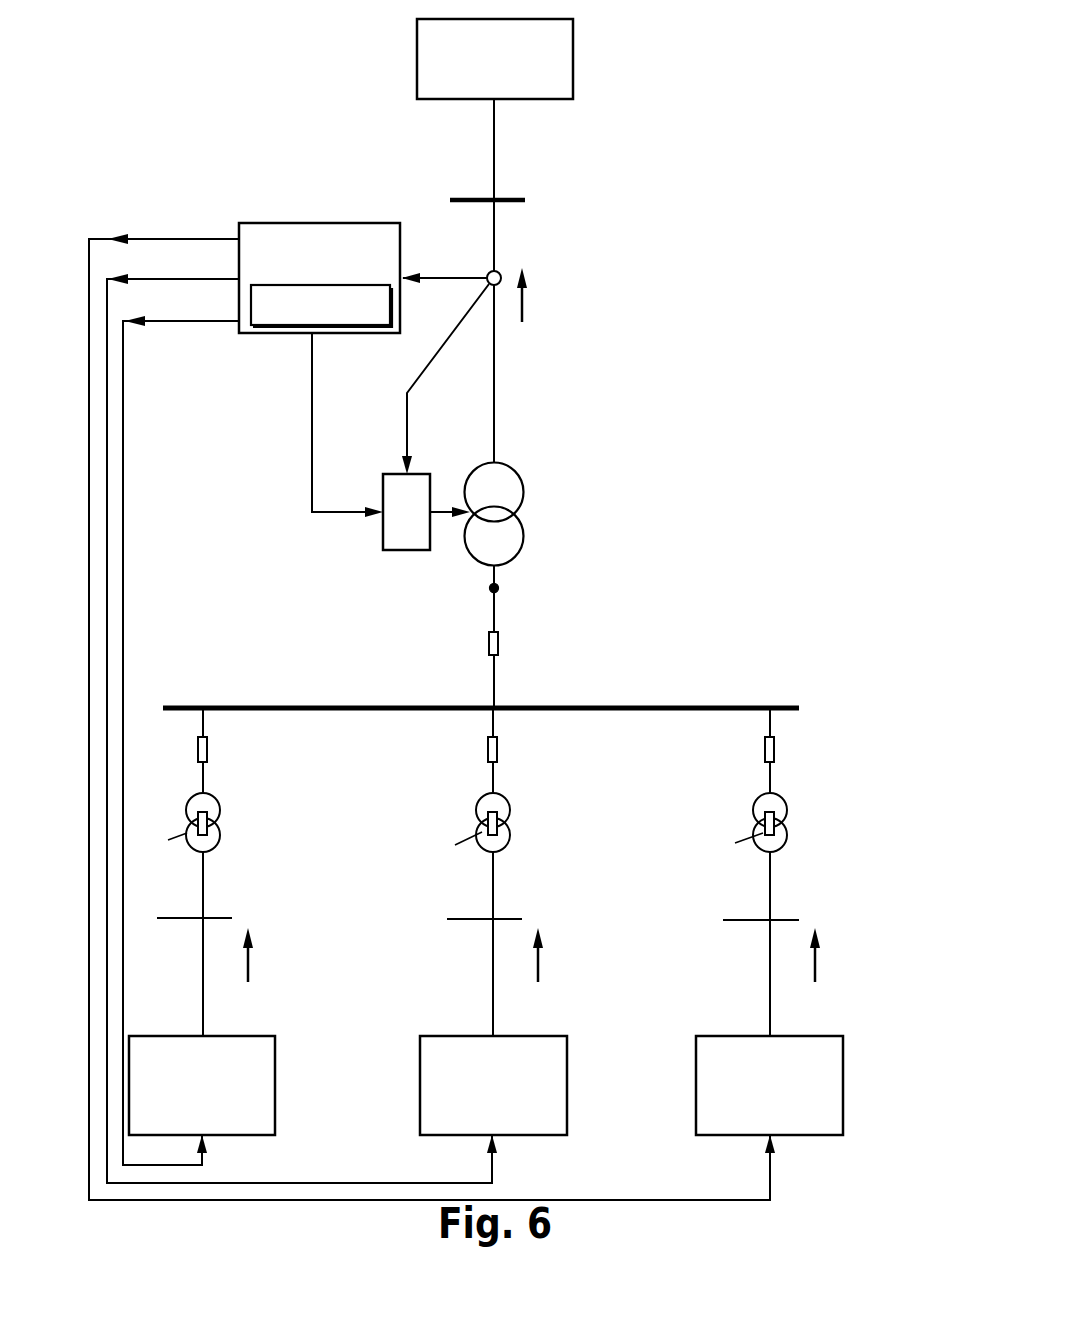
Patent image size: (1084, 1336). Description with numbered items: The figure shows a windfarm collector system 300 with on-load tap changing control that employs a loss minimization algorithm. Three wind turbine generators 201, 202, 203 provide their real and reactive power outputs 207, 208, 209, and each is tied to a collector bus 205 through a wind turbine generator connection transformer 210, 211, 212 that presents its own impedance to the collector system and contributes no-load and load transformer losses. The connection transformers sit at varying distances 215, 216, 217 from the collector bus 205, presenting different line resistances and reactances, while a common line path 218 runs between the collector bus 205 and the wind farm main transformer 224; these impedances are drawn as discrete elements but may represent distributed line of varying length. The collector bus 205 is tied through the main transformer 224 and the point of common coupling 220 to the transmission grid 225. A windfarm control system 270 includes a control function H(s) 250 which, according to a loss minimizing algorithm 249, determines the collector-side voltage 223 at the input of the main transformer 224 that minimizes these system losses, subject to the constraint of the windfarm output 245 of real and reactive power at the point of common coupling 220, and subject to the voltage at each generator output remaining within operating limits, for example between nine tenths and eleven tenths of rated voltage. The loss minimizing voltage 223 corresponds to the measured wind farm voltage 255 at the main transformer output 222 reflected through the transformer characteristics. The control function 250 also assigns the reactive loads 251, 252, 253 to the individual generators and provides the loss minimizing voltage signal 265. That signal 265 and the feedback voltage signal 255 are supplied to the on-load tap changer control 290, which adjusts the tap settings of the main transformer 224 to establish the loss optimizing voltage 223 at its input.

The wind turbine generator 201 is at (275, 1058).
The wind turbine generator 202 is at (567, 1058).
The wind turbine generator 203 is at (843, 1058).
The collector bus 205 is at (670, 711).
The output P1+jQ1 207 is at (247, 983).
The output P2+jQ2 208 is at (537, 983).
The output P3+jQ3 209 is at (814, 983).
The wind turbine generator connection transformer 210 is at (172, 808).
The wind turbine generator connection transformer 211 is at (457, 801).
The wind turbine generator connection transformer 212 is at (734, 801).
The line distance Z4 215 is at (205, 722).
The line distance Z5 216 is at (495, 725).
The line distance Z6 217 is at (772, 727).
The common path Z7 218 is at (498, 639).
The point of common coupling (POCC) 220 is at (525, 200).
The main transformer output 222 is at (494, 407).
The collector-side voltage Vc 223 is at (498, 588).
The wind farm main transformer 224 is at (587, 518).
The transmission grid 225 is at (573, 78).
The windfarm output 245 is at (553, 350).
The loss minimizing algorithm 249 is at (276, 327).
The control function H(s) 250 is at (317, 223).
The reactive load Q1 251 is at (181, 730).
The reactive load Q2 252 is at (302, 716).
The reactive load Q3 253 is at (432, 707).
The measured voltage VWF 255 is at (445, 379).
The loss minimizing voltage signal VLM 265 is at (347, 425).
The windfarm control system 270 is at (280, 144).
The on-load tap changer control 290 is at (402, 550).
The wind farm system 300 is at (802, 318).